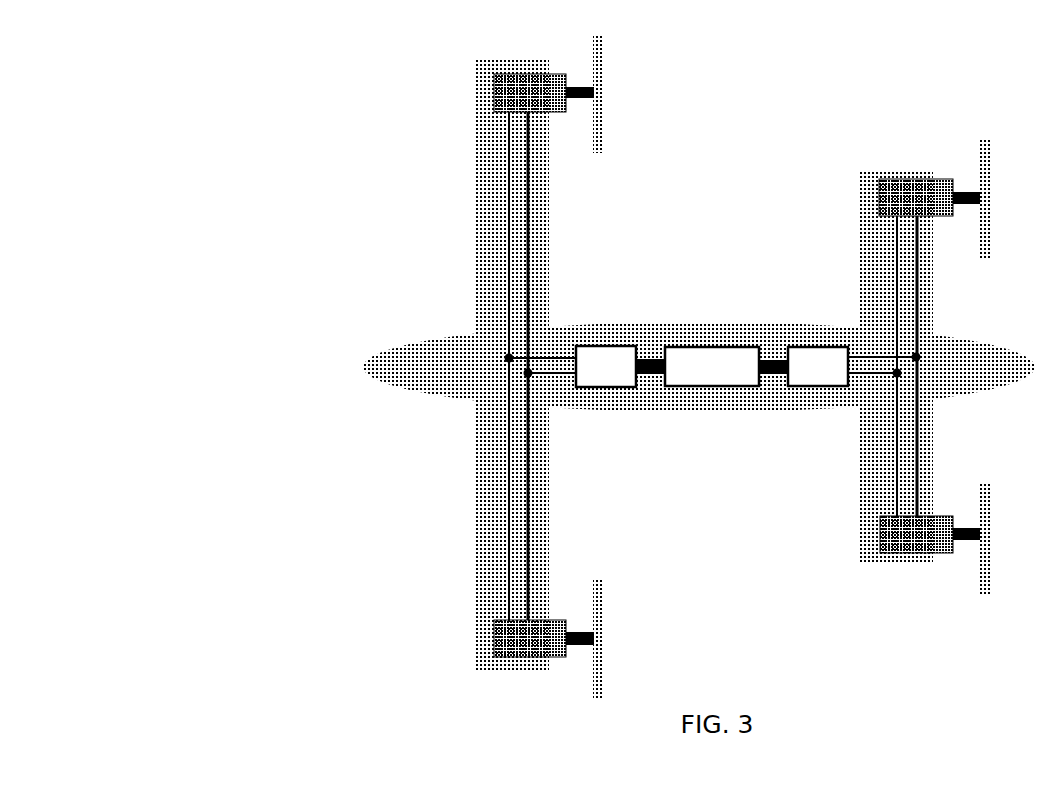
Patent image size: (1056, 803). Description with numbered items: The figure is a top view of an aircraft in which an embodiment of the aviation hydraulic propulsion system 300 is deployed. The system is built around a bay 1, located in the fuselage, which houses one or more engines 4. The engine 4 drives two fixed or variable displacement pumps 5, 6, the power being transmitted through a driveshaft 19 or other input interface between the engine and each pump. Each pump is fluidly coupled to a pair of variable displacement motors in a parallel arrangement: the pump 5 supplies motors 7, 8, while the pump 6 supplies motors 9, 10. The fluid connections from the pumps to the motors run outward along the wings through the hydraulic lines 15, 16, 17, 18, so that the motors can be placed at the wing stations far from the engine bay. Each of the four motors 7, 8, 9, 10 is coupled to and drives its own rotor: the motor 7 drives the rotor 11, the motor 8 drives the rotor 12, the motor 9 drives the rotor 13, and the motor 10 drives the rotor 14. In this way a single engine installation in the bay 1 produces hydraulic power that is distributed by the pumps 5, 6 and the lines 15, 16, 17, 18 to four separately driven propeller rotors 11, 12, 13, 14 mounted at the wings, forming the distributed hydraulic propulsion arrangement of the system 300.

The propulsion system 300 is at (100, 64).
The bay 1 is at (712, 316).
The engine 4 is at (709, 389).
The pump 5 is at (810, 389).
The pump 6 is at (599, 391).
The motor 7 is at (877, 200).
The motor 8 is at (877, 540).
The motor 9 is at (490, 100).
The motor 10 is at (488, 644).
The rotor 11 is at (994, 223).
The rotor 12 is at (995, 505).
The rotor 13 is at (609, 66).
The rotor 14 is at (609, 606).
The hydraulic line 15 is at (919, 315).
The hydraulic line 16 is at (894, 292).
The hydraulic line 17 is at (533, 218).
The hydraulic line 18 is at (506, 250).
The driveshaft 19 is at (647, 355).